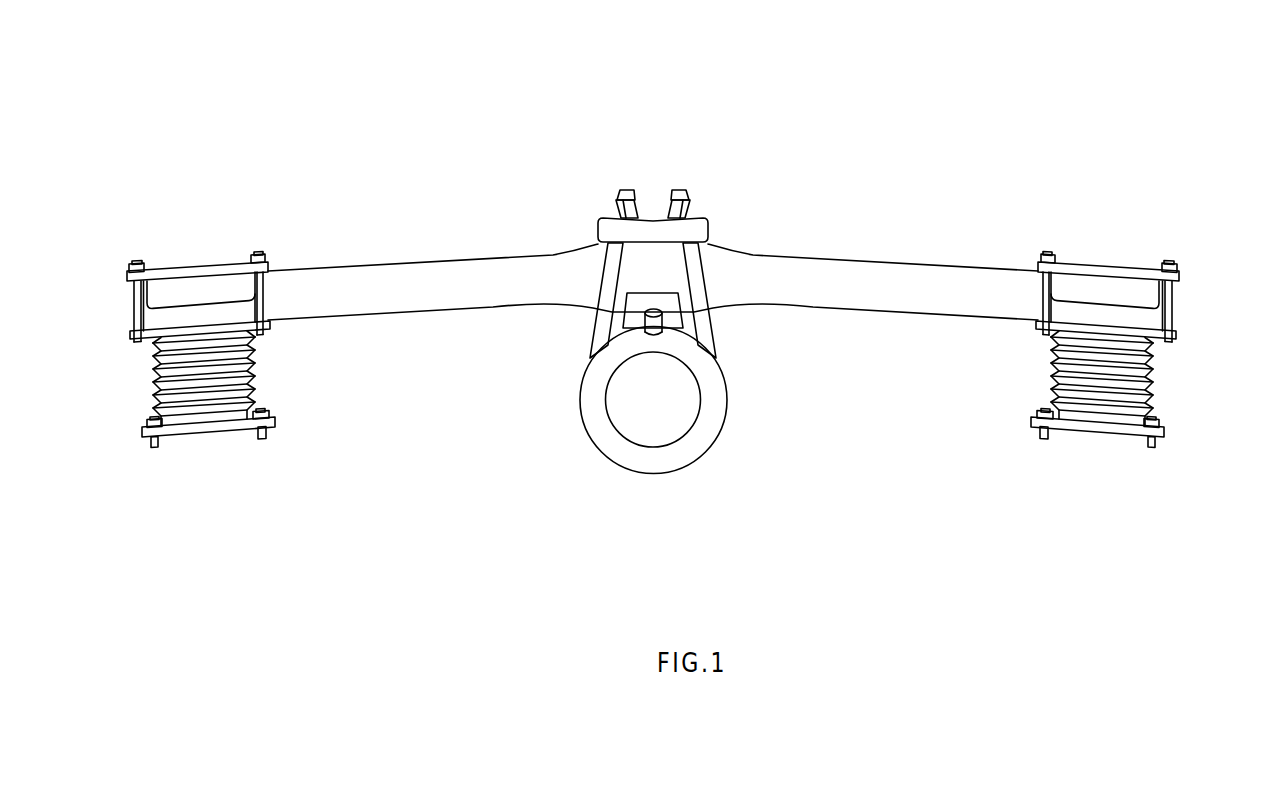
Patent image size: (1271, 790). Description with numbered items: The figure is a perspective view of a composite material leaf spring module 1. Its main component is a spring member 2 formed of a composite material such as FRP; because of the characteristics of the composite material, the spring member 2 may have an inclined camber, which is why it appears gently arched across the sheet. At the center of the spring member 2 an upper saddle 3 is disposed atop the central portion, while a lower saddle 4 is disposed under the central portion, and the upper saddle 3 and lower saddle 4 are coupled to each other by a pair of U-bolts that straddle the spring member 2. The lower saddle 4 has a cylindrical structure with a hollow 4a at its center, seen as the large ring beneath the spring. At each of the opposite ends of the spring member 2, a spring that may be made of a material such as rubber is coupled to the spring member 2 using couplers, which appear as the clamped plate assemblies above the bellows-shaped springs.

The composite material leaf spring module 1 is at (120, 92).
The spring member 2 is at (828, 252).
The upper saddle 3 is at (604, 232).
The lower saddle 4 is at (623, 452).
The hollow 4a is at (670, 401).